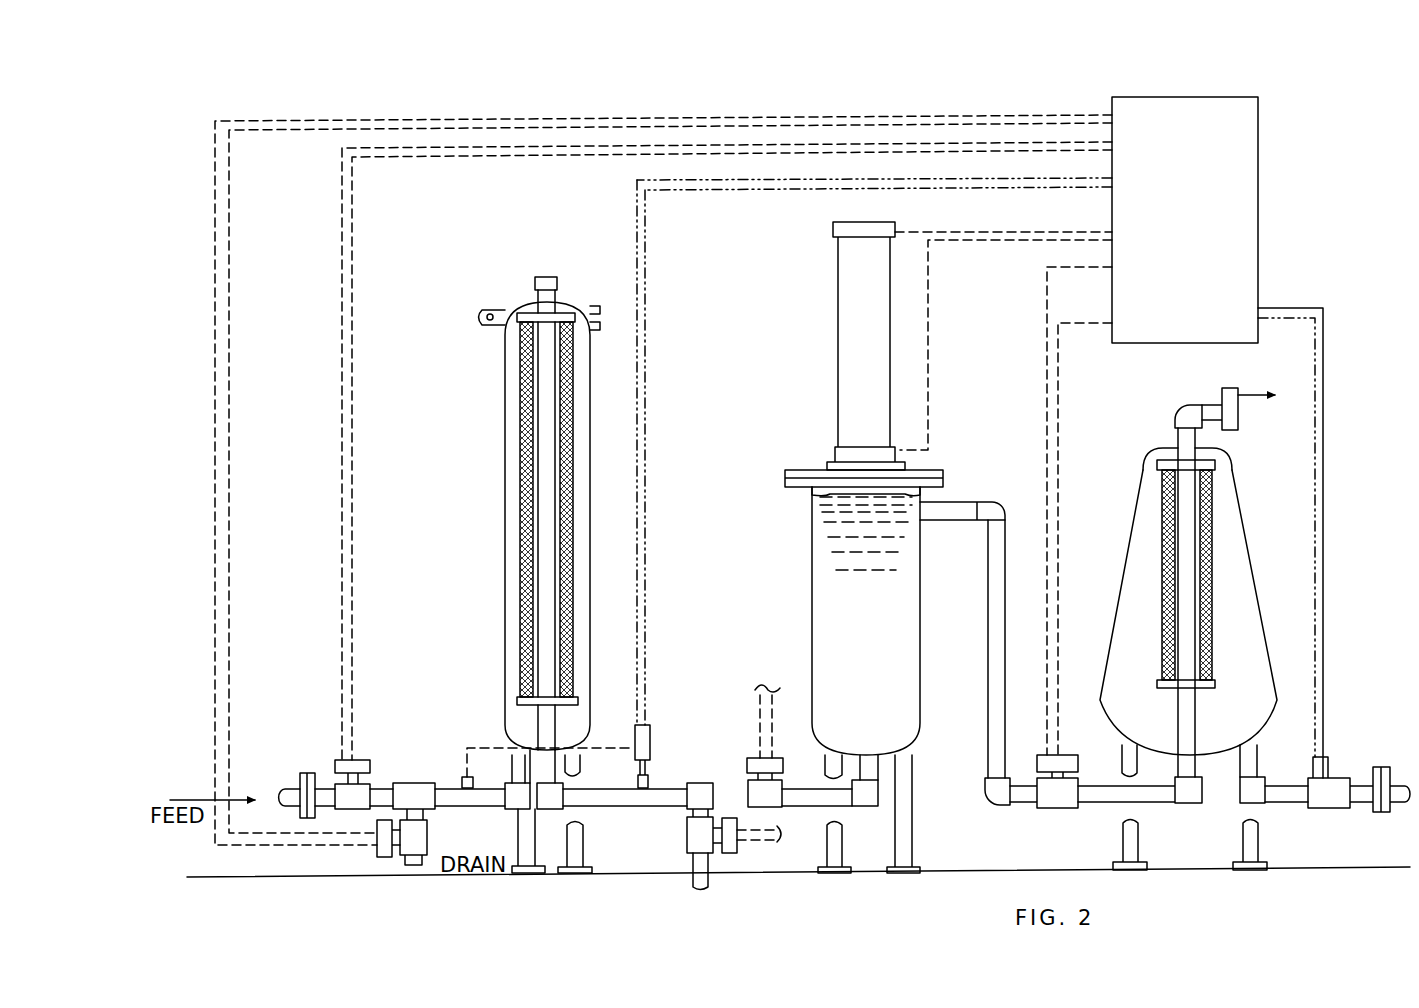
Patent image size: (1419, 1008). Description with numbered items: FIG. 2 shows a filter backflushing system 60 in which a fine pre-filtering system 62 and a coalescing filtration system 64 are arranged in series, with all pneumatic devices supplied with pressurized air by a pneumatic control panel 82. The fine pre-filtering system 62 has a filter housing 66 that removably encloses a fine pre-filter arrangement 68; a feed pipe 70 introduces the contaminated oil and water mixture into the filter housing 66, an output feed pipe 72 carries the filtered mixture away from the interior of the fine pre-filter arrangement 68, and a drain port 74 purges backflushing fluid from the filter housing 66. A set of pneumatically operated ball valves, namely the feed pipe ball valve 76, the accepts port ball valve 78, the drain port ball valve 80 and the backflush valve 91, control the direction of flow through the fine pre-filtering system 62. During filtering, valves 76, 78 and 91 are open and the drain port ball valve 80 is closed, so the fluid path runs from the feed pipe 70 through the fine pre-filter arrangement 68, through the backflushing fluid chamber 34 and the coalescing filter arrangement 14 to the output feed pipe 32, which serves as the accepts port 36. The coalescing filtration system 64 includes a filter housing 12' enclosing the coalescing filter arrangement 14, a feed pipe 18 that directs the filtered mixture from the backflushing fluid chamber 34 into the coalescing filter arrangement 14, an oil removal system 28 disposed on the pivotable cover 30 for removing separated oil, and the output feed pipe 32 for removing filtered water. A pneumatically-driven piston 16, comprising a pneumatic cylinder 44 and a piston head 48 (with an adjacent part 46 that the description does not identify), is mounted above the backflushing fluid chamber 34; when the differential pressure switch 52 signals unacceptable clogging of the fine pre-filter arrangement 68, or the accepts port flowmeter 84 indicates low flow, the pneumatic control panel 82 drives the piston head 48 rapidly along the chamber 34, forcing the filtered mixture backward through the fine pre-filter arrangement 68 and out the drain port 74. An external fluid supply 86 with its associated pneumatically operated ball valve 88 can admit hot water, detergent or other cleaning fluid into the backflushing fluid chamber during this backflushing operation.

The filter backflushing system 60 is at (1298, 100).
The pneumatic control panel 82 is at (1190, 112).
The fine pre-filtering system 62 is at (499, 530).
The filter housing 66 is at (512, 462).
The fine pre-filter arrangement 68 is at (522, 545).
The pneumatically-driven piston 16 is at (833, 501).
The pneumatic cylinder 44 is at (848, 310).
The cover plate 46 is at (790, 487).
The piston head 48 is at (798, 490).
The backflushing fluid chamber 34 is at (882, 630).
The accepts port 36 is at (991, 680).
The coalescing filtration system 64 is at (1183, 582).
The filter housing 12' is at (1172, 625).
The pivotable cover 30 is at (1192, 575).
The coalescing filter arrangement 14 is at (1162, 612).
The oil removal system 28 is at (1185, 412).
The feed pipe 70 is at (293, 790).
The feed pipe ball valve 76 is at (370, 760).
The drain port 74 is at (405, 862).
The drain port ball valve 80 is at (430, 836).
The differential pressure switch 52 is at (650, 720).
The backflush valve 91 is at (748, 752).
The output feed pipe 72 is at (703, 792).
The pneumatically operated ball valve 88 is at (690, 843).
The external fluid supply 86 is at (710, 878).
The accepts port ball valve 78 is at (1052, 808).
The feed pipe 18 is at (1145, 802).
The output feed pipe 32 is at (1290, 802).
The accepts port flowmeter 84 is at (1345, 772).